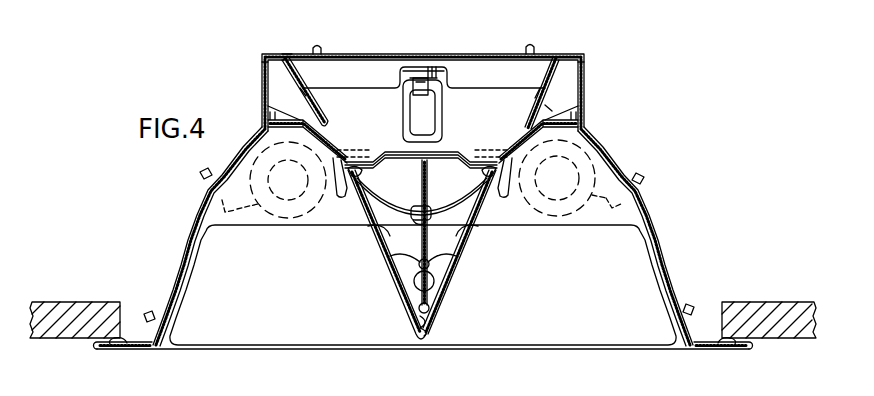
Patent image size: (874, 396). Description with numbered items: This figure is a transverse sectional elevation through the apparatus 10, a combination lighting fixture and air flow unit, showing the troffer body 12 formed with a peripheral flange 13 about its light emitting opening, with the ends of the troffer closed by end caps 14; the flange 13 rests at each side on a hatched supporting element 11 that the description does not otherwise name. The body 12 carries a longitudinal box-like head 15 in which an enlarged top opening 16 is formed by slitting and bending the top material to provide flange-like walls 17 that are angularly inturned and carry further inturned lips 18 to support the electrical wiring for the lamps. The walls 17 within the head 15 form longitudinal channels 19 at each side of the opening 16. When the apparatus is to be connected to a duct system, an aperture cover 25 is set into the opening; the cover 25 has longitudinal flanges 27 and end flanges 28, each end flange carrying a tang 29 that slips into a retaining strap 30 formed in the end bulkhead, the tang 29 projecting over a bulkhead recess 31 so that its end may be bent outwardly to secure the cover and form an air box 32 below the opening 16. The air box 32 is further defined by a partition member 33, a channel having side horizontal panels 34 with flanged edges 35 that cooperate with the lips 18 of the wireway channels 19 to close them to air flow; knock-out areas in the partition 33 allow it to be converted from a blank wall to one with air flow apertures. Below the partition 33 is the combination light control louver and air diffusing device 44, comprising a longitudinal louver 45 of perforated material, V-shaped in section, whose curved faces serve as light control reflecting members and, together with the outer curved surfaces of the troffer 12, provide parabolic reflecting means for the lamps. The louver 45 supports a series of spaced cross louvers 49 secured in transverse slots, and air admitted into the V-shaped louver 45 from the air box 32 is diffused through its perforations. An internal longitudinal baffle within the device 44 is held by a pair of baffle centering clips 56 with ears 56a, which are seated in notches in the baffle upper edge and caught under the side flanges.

The apparatus 10 is at (684, 157).
The ceiling support panel 11 is at (52, 340).
The troffer body 12 is at (192, 220).
The peripheral flange 13 is at (140, 344).
The end caps 14 is at (672, 256).
The box-like head 15 is at (584, 90).
The top opening 16 is at (283, 53).
The flange-like walls 17 is at (309, 92).
The inturned lips 18 is at (268, 106).
The longitudinal channels 19 is at (262, 74).
The aperture cover 25 is at (372, 54).
The longitudinal flanges 27 is at (298, 70).
The end flanges 28 is at (472, 58).
The tang 29 is at (412, 84).
The retaining strap 30 is at (413, 67).
The bulkhead recess 31 is at (436, 112).
The air box 32 is at (496, 135).
The partition member 33 is at (272, 134).
The side horizontal panels 34 is at (291, 145).
The flanged edges 35 is at (270, 123).
The combination light control louver and air diffusing device 44 is at (369, 217).
The longitudinal louver 45 is at (478, 222).
The cross louvers 49 is at (619, 338).
The baffle centering clips 56 is at (444, 208).
The ears 56a is at (468, 205).